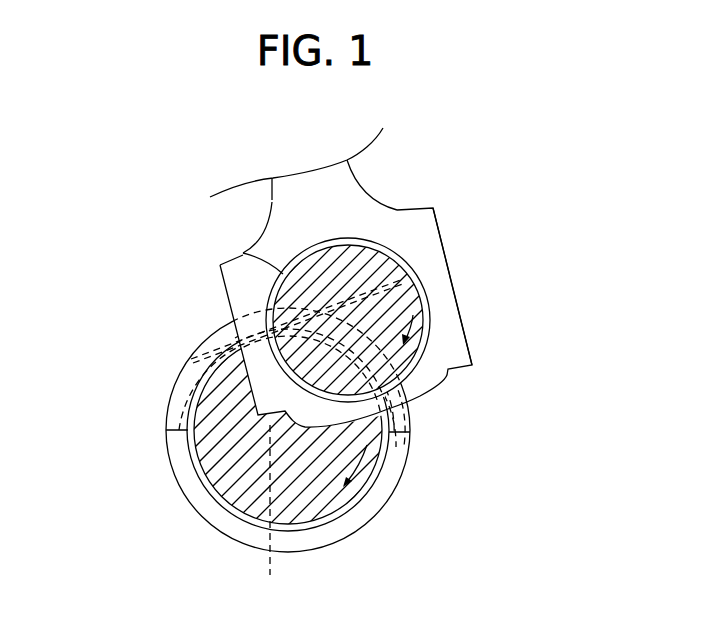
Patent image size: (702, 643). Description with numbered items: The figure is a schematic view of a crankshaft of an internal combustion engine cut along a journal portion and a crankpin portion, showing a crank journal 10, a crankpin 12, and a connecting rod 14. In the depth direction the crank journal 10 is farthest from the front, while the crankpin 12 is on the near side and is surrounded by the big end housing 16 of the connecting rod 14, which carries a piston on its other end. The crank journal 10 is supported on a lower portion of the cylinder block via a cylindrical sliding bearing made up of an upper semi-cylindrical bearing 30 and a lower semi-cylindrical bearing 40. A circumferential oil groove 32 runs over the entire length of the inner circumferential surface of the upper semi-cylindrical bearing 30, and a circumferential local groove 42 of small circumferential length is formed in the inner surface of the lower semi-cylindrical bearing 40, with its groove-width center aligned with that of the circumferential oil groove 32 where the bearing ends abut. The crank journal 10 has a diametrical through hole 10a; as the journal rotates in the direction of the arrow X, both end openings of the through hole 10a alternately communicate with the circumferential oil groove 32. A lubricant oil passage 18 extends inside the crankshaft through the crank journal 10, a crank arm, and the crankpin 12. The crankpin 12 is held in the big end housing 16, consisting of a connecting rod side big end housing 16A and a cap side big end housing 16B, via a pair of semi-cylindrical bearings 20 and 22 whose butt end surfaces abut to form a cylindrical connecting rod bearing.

The crank journal 10 is at (232, 500).
The diametrical through hole 10a is at (268, 514).
The crankpin 12 is at (365, 265).
The connecting rod 14 is at (272, 200).
The big end housing 16 is at (463, 279).
The connecting rod side big end housing 16A is at (450, 262).
The cap side big end housing 16B is at (474, 318).
The lubricant oil passage 18 is at (352, 330).
The semi-cylindrical bearing 20 is at (243, 253).
The semi-cylindrical bearing 22 is at (432, 338).
The upper semi-cylindrical bearing 30 is at (178, 390).
The circumferential oil groove 32 is at (186, 414).
The lower semi-cylindrical bearing 40 is at (178, 476).
The circumferential local groove 42 is at (398, 447).
The arrow X is at (357, 470).